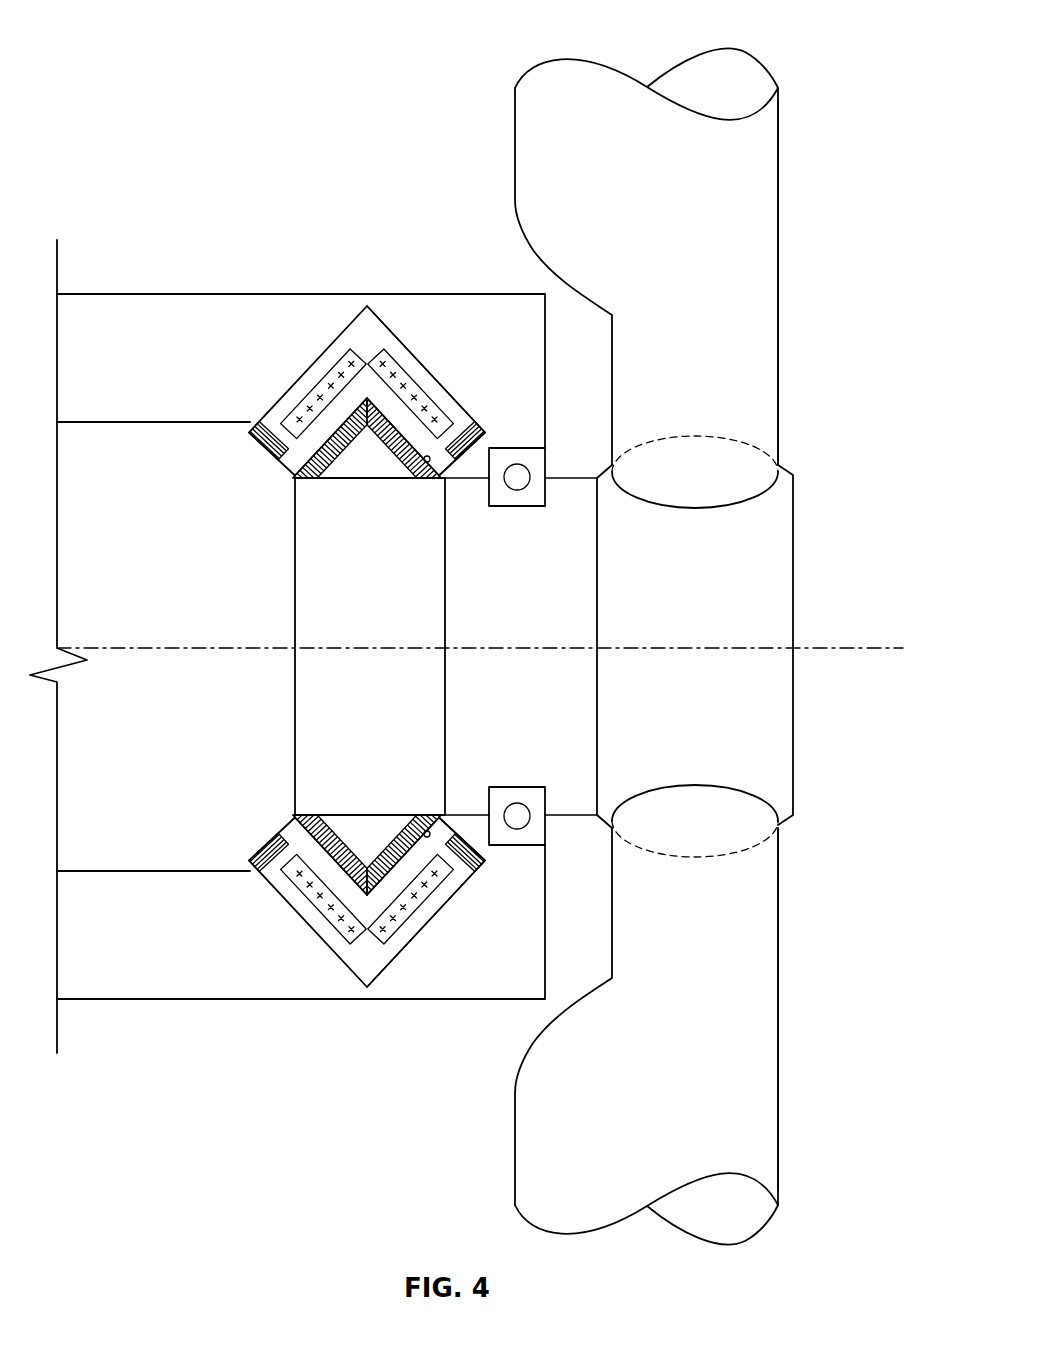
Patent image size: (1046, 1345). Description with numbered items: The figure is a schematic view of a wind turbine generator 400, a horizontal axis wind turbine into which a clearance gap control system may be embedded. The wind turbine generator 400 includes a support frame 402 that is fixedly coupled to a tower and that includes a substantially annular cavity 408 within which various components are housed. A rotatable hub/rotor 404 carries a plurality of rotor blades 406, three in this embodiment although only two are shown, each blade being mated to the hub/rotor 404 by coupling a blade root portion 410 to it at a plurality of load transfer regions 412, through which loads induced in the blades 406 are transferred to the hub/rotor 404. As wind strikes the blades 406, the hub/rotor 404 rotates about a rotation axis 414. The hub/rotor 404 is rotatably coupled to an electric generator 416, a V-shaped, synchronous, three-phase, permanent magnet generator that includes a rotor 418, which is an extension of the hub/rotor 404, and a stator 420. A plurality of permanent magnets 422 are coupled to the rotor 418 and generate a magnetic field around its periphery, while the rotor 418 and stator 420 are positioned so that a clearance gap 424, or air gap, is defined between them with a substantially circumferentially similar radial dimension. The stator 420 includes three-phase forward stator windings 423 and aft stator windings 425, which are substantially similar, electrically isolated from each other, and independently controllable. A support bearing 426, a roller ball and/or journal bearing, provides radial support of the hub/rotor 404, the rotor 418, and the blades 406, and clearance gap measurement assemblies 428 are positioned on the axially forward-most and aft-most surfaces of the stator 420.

The wind turbine generator 400 is at (108, 45).
The support frame 402 is at (69, 371).
The hub/rotor 404 is at (672, 622).
The rotor blades 406 is at (624, 222).
The annular cavity 408 is at (96, 626).
The blade root portion 410 is at (750, 393).
The load transfer regions 412 is at (732, 473).
The rotation axis 414 is at (840, 645).
The electric generator 416 is at (352, 283).
The rotor 418 is at (346, 622).
The stator 420 is at (310, 368).
The permanent magnets 422 is at (305, 460).
The forward stator windings 423 is at (445, 408).
The clearance gap 424 is at (387, 402).
The aft stator windings 425 is at (300, 407).
The support bearing 426 is at (499, 622).
The clearance gap measurement assemblies 428 is at (490, 430).